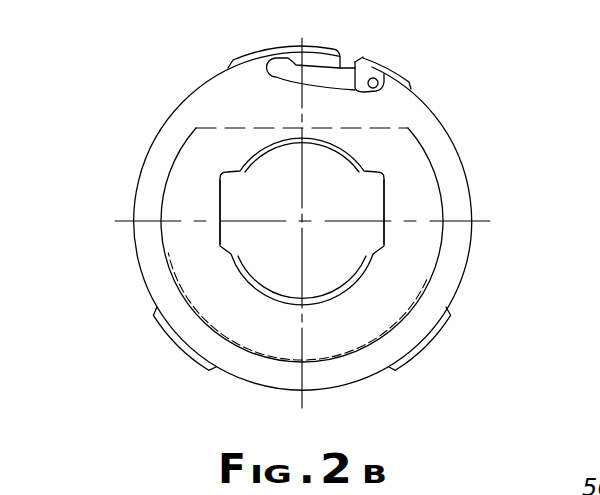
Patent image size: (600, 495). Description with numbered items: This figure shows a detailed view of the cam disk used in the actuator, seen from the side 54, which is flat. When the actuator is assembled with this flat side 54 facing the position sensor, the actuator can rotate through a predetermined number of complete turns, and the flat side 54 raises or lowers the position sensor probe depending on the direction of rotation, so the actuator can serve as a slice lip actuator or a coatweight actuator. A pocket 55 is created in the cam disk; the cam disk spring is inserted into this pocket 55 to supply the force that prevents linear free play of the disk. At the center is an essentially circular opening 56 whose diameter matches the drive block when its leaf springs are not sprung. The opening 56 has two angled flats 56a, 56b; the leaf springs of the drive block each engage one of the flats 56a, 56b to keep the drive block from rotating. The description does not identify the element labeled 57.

The side 54 is at (413, 112).
The pocket 55 is at (327, 77).
The circular opening 56 is at (340, 247).
The angled flat 56a is at (225, 172).
The angled flat 56b is at (379, 172).
The outer rim 57 is at (133, 248).